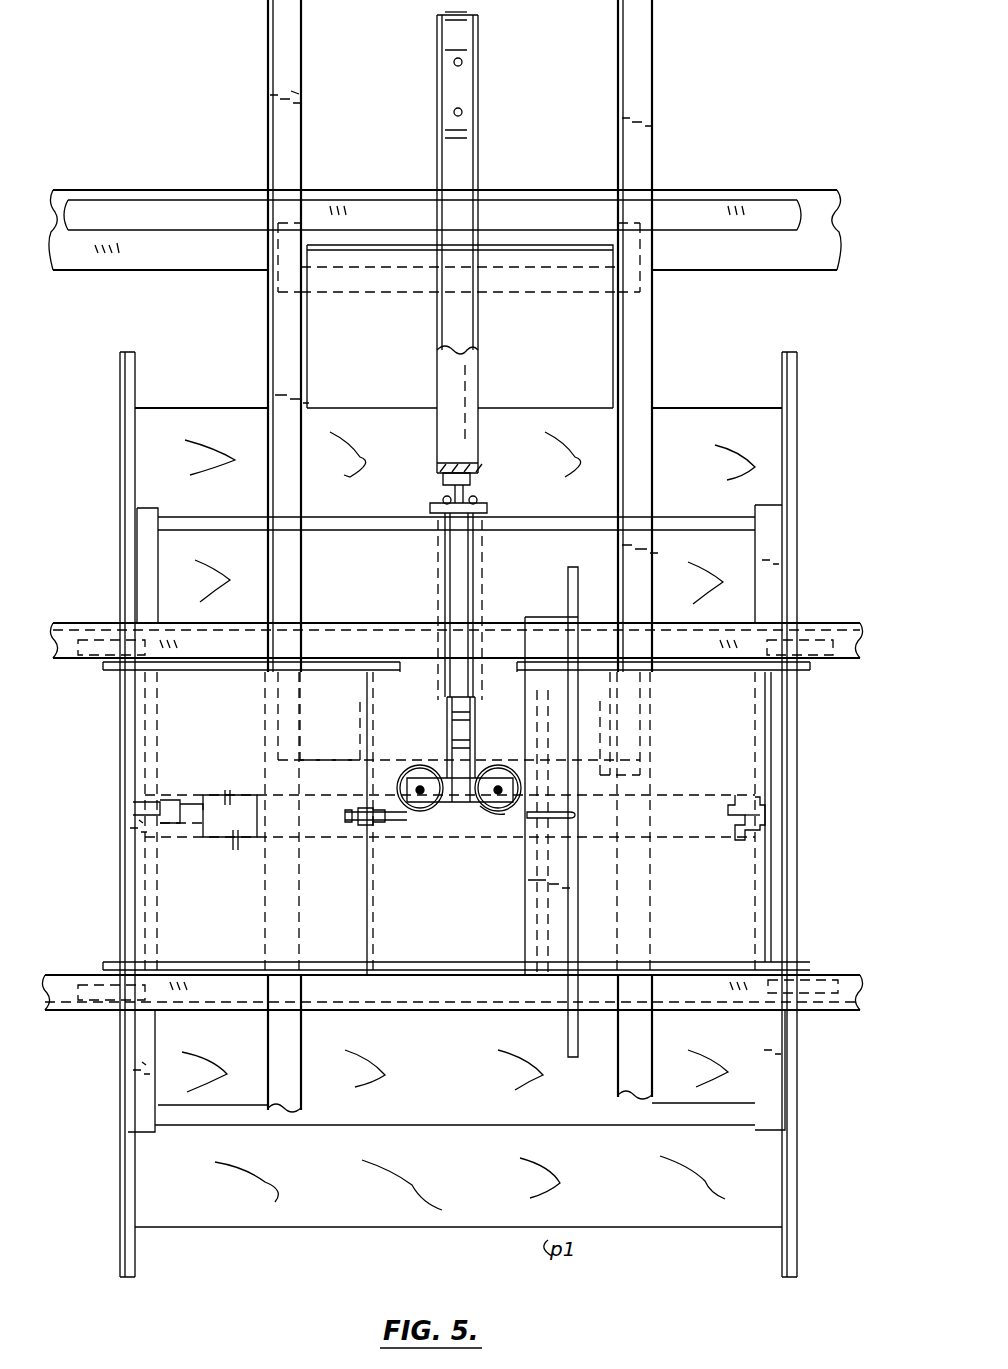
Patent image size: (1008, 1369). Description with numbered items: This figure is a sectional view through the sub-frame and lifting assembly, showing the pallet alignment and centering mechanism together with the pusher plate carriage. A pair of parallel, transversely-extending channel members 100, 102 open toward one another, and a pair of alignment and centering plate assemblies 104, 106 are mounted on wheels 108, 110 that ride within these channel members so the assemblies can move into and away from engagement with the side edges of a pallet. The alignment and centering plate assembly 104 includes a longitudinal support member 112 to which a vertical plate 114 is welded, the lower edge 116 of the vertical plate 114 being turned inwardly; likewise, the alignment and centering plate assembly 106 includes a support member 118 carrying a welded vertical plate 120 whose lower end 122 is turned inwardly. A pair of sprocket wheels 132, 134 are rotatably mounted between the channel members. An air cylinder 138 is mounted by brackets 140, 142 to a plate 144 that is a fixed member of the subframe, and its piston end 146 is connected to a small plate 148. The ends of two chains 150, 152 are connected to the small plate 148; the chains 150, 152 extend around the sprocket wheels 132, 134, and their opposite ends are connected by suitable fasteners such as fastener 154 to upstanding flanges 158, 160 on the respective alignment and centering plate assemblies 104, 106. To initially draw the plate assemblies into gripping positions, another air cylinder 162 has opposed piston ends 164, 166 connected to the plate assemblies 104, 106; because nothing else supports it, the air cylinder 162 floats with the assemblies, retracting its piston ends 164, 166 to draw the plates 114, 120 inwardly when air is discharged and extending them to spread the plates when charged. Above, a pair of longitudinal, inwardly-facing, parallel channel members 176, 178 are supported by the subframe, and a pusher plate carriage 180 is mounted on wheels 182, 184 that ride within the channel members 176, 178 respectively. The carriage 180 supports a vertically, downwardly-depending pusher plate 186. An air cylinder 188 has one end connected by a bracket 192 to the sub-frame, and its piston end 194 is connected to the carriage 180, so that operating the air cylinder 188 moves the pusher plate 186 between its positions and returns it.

The channel member 100 is at (814, 624).
The channel member 102 is at (854, 986).
The alignment and centering plate assembly 104 is at (169, 884).
The alignment and centering plate assembly 106 is at (743, 893).
The wheels 108 is at (345, 653).
The wheels 110 is at (510, 653).
The longitudinal support member 112 is at (128, 858).
The vertical plate 114 is at (118, 808).
The lower edge 116 is at (132, 366).
The support member 118 is at (782, 754).
The vertical plate 120 is at (790, 803).
The lower end 122 is at (788, 346).
The sprocket wheel 132 is at (420, 768).
The sprocket wheel 134 is at (497, 810).
The air cylinder 138 is at (478, 150).
The bracket 140 is at (437, 92).
The bracket 142 is at (478, 440).
The plate 144 is at (465, 90).
The piston end 146 is at (443, 482).
The small plate 148 is at (490, 510).
The chain 150 is at (445, 544).
The chain 152 is at (474, 572).
The fastener 154 is at (350, 828).
The upstanding flange 158 is at (368, 914).
The upstanding flange 160 is at (536, 922).
The air cylinder 162 is at (688, 790).
The piston end 164 is at (201, 793).
The piston end 166 is at (742, 848).
The channel member 176 is at (652, 348).
The channel member 178 is at (268, 340).
The pusher plate carriage 180 is at (583, 385).
The wheels 182 is at (658, 288).
The wheels 184 is at (283, 274).
The pusher plate 186 is at (360, 296).
The air cylinder 188 is at (435, 608).
The bracket 192 is at (478, 12).
The piston end 194 is at (543, 828).